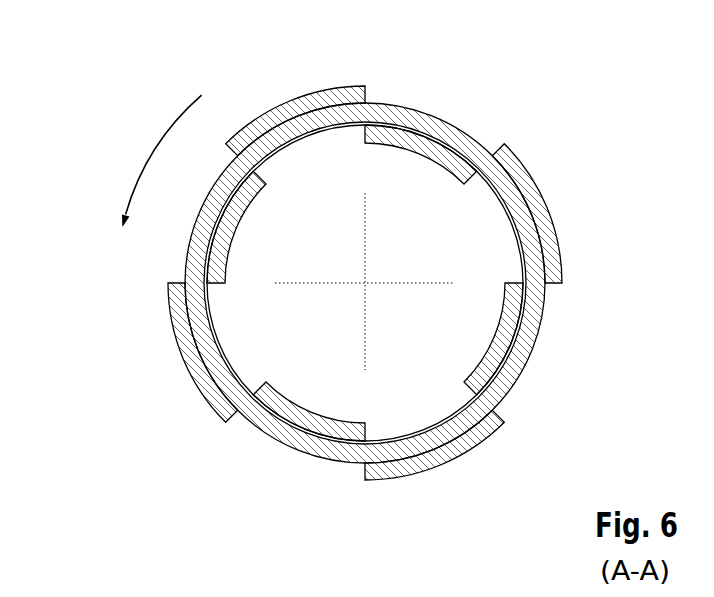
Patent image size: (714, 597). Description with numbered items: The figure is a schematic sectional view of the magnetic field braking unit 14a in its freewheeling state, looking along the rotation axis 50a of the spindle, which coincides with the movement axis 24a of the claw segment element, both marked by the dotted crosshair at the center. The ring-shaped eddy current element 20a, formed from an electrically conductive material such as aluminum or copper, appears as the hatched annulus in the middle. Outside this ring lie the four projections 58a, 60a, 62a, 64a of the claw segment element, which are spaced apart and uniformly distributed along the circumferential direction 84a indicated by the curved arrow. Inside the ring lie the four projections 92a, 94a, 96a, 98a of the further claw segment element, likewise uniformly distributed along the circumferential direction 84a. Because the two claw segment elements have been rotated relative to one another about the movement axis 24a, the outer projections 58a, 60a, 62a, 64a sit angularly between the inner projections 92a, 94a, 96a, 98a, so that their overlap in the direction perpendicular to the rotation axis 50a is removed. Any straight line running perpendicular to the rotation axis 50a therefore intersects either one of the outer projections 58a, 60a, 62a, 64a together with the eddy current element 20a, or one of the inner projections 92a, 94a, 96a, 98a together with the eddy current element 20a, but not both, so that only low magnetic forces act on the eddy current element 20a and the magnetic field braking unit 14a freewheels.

The magnetic field braking unit 14a is at (95, 145).
The eddy current element 20a is at (532, 313).
The movement axis 24a is at (373, 281).
The rotation axis 50a is at (368, 284).
The projection 58a is at (540, 212).
The projection 60a is at (300, 106).
The projection 62a is at (192, 353).
The projection 64a is at (435, 460).
The circumferential direction 84a is at (153, 148).
The projection 92a is at (497, 342).
The projection 94a is at (430, 152).
The projection 96a is at (232, 220).
The projection 98a is at (307, 412).